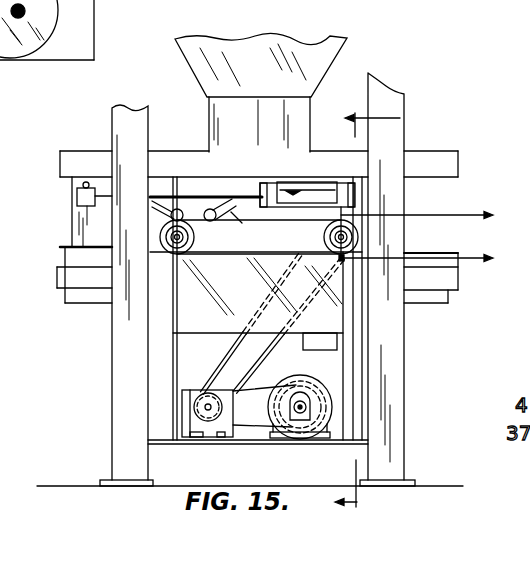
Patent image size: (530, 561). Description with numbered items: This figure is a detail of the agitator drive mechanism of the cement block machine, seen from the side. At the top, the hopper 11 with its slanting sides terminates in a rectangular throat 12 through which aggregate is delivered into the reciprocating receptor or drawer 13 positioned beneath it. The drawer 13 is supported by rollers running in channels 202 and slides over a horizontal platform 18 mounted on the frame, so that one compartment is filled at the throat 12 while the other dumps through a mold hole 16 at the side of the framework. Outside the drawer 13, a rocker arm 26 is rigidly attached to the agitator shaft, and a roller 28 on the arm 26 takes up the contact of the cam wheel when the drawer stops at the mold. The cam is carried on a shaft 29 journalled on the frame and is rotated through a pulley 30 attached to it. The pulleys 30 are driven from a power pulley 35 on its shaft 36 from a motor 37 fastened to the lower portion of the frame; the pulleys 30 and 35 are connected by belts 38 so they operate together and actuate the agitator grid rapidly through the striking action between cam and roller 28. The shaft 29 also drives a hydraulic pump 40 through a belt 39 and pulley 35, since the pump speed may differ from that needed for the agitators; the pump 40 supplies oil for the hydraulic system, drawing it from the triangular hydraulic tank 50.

The hopper 11 is at (349, 38).
The throat 12 is at (207, 130).
The receptor or drawer 13 is at (70, 205).
The mold hole 16 is at (389, 310).
The platform 18 is at (440, 255).
The rocker arm 26 is at (259, 237).
The roller 28 is at (205, 197).
The shaft 29 is at (303, 414).
The pulley 30 is at (191, 246).
The power pulley 35 is at (226, 392).
The shaft 36 is at (204, 407).
The motor 37 is at (318, 392).
The belts 38 is at (297, 227).
The belt 39 is at (257, 389).
The hydraulic pump 40 is at (238, 428).
The hydraulic tank 50 is at (206, 316).
The channels 202 is at (309, 179).